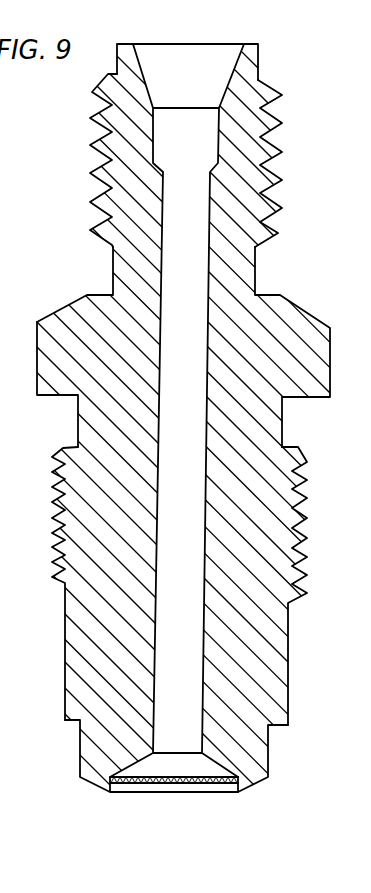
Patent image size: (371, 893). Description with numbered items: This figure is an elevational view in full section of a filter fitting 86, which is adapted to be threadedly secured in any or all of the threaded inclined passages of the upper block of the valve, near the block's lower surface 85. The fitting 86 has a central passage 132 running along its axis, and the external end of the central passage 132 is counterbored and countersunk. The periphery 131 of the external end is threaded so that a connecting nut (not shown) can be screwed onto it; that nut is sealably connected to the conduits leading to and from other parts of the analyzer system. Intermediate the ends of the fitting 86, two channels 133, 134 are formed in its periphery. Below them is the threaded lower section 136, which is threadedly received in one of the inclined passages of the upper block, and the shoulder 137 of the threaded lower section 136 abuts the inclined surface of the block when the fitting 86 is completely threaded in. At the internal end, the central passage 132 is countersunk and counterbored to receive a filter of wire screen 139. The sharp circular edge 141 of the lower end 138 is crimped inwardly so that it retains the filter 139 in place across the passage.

The filter fitting 86 is at (260, 44).
The periphery of the external end 131 is at (282, 94).
The central passage 132 is at (198, 288).
The channel 133 is at (112, 253).
The channel 134 is at (78, 410).
The threaded lower section 136 is at (302, 496).
The shoulder 137 is at (318, 399).
The lower end 138 is at (108, 788).
The filter of wire screen 139 is at (194, 777).
The sharp circular edge 141 is at (240, 791).
The lower surface 85 is at (0, 780).